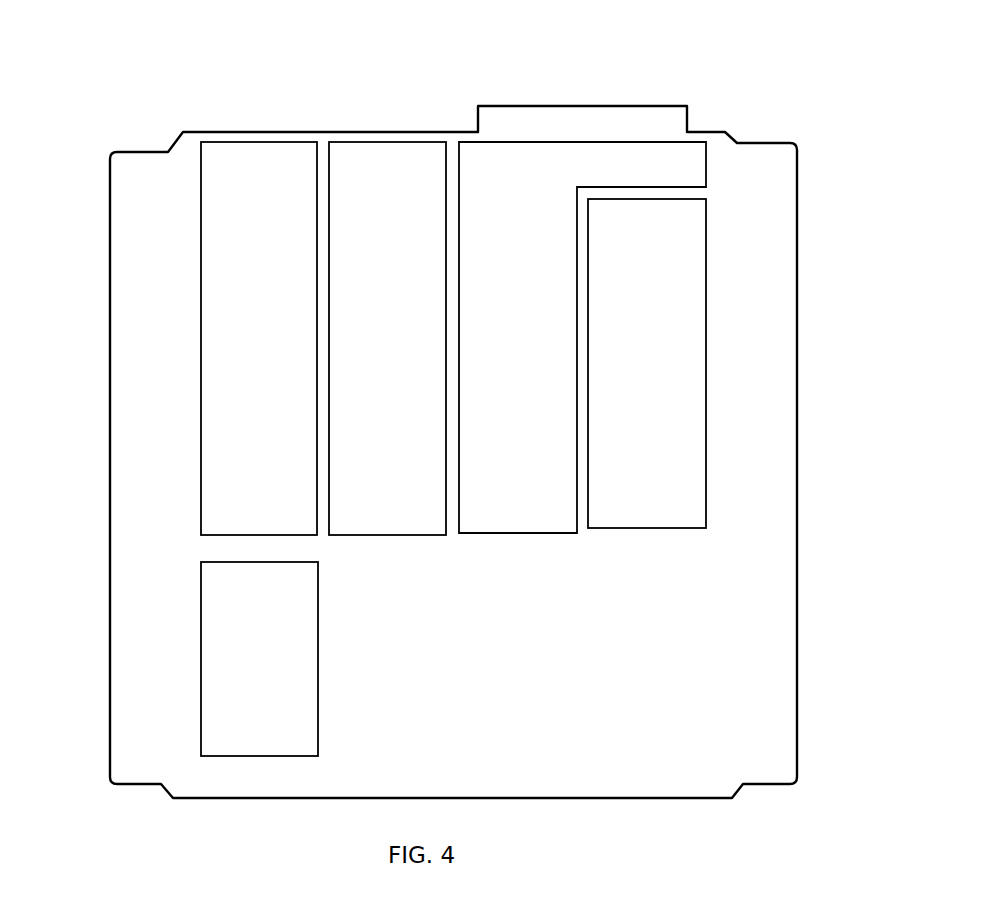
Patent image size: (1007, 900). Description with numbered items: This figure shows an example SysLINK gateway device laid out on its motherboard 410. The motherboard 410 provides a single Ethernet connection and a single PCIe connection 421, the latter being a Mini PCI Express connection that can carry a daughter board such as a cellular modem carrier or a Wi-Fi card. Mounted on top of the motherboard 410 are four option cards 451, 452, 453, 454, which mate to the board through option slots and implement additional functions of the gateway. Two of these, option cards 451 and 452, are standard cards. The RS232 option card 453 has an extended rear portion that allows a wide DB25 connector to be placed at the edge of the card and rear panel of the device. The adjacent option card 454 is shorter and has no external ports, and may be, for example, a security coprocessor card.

The motherboard 410 is at (723, 165).
The PCIe connection 421 is at (245, 597).
The option card 451 is at (259, 158).
The option card 452 is at (382, 152).
The RS232 option card 453 is at (524, 188).
The option card 454 is at (692, 287).